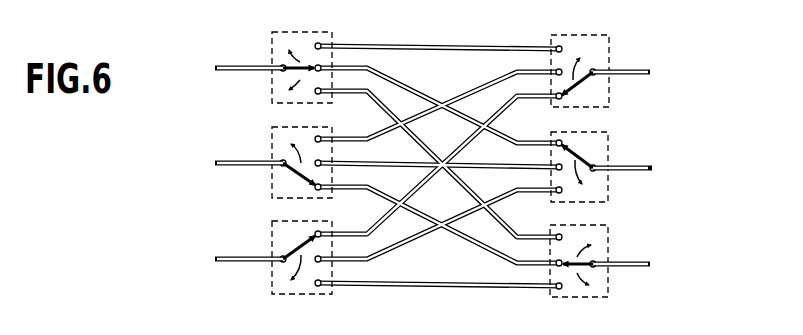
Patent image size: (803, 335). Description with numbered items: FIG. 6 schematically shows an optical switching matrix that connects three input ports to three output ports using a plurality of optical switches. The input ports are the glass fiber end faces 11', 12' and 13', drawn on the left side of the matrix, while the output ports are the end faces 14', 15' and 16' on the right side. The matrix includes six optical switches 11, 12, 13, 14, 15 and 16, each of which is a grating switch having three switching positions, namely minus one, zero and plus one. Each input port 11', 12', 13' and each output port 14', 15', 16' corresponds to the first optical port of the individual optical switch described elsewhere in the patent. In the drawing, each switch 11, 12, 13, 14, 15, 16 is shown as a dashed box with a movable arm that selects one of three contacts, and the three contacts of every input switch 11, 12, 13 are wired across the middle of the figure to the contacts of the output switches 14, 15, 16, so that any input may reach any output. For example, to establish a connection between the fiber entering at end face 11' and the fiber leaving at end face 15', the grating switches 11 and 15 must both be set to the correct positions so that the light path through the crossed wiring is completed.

The optical switch 11 is at (284, 55).
The glass fiber end face 11' is at (273, 86).
The optical switch 12 is at (282, 162).
The glass fiber end face 12' is at (265, 182).
The optical switch 13 is at (282, 257).
The glass fiber end face 13' is at (265, 265).
The optical switch 14 is at (599, 61).
The end face 14' is at (606, 91).
The optical switch 15 is at (599, 165).
The end face 15' is at (602, 177).
The optical switch 16 is at (594, 261).
The end face 16' is at (606, 281).